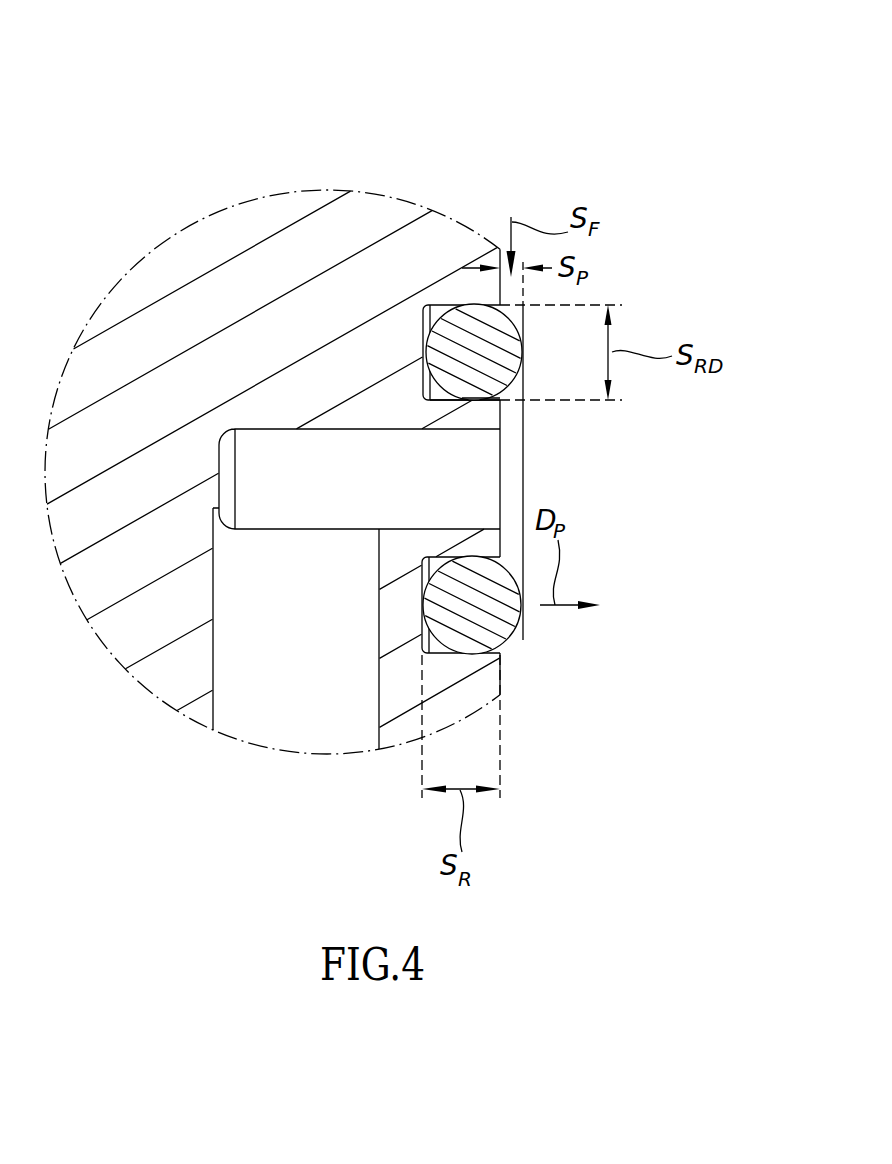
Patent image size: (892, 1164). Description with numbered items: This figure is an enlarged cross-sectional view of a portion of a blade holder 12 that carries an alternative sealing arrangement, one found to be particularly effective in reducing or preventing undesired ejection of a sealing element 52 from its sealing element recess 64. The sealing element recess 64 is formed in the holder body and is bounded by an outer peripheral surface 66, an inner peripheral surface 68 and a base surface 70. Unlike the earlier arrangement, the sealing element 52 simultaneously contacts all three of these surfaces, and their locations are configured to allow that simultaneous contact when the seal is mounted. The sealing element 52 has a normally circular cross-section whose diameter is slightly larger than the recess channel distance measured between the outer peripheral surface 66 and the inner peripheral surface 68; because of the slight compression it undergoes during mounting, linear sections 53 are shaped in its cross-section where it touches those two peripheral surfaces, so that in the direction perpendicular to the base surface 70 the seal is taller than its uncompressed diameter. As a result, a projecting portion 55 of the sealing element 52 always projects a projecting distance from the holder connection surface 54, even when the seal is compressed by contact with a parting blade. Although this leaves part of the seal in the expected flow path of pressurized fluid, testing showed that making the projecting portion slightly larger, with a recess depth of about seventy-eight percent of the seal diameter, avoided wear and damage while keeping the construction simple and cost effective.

The blade holder 12 is at (497, 88).
The sealing element recess 64 is at (410, 325).
The base surface 70 is at (428, 318).
The outer peripheral surface 66 is at (448, 306).
The holder connection surface 54 is at (498, 250).
The sealing element 52 is at (442, 355).
The linear sections 53 is at (473, 396).
The inner peripheral surface 68 is at (430, 402).
The projecting portion 55 is at (518, 647).